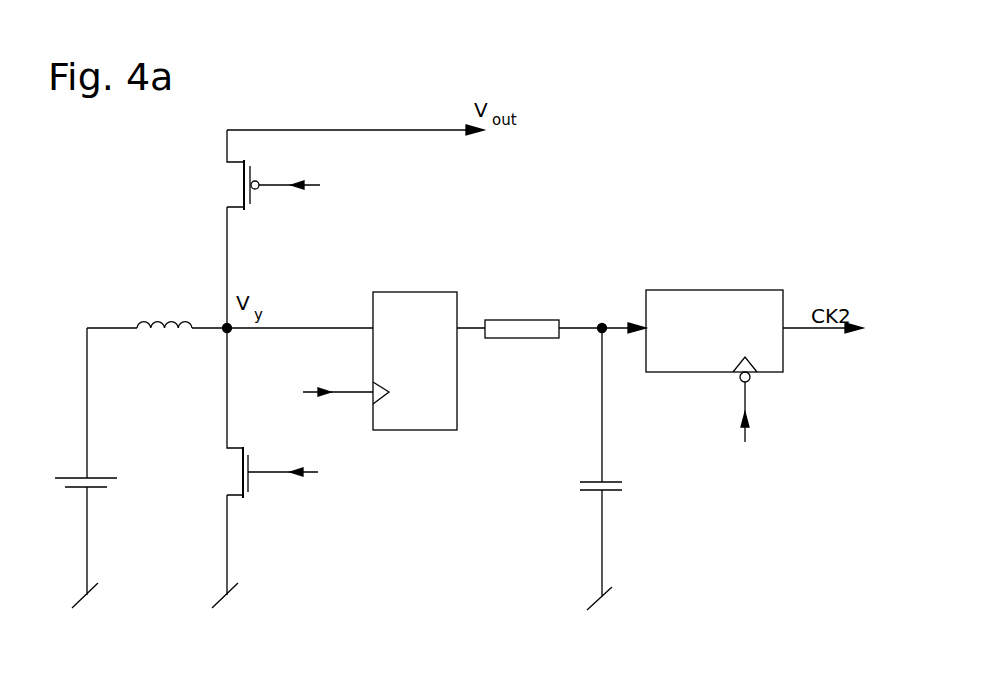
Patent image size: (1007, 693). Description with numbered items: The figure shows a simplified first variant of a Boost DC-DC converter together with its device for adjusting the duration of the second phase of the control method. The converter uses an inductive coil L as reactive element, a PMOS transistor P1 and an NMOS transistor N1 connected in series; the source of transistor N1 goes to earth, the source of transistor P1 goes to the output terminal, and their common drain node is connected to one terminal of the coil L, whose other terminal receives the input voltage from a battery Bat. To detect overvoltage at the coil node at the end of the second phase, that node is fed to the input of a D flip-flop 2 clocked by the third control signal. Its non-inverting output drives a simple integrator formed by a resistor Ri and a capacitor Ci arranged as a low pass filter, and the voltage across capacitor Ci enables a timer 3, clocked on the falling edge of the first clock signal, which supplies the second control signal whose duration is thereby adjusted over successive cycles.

The D flip-flop 2 is at (433, 416).
The timer 3 is at (714, 302).
The PMOS transistor P1 is at (263, 229).
The NMOS transistor N1 is at (261, 468).
The inductive coil L is at (139, 308).
The battery Bat is at (78, 468).
The resistor Ri is at (529, 312).
The capacitor Ci is at (606, 469).